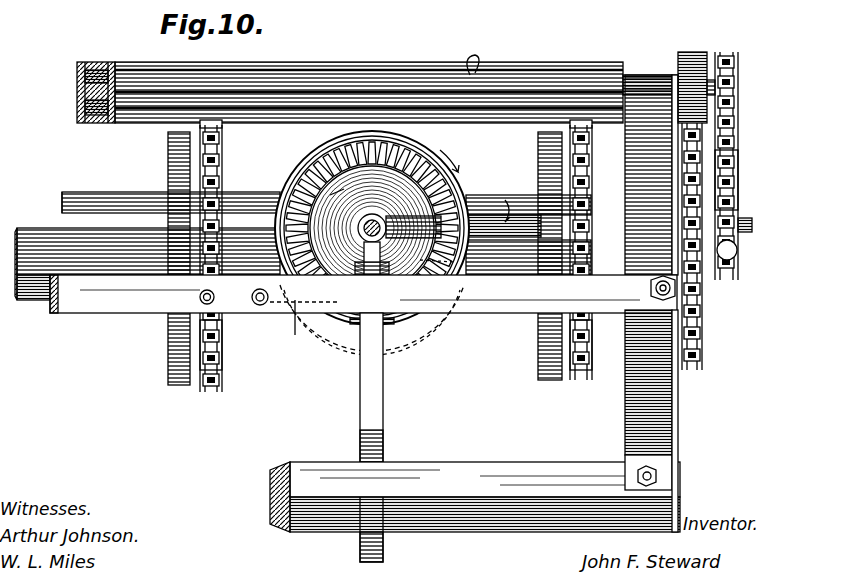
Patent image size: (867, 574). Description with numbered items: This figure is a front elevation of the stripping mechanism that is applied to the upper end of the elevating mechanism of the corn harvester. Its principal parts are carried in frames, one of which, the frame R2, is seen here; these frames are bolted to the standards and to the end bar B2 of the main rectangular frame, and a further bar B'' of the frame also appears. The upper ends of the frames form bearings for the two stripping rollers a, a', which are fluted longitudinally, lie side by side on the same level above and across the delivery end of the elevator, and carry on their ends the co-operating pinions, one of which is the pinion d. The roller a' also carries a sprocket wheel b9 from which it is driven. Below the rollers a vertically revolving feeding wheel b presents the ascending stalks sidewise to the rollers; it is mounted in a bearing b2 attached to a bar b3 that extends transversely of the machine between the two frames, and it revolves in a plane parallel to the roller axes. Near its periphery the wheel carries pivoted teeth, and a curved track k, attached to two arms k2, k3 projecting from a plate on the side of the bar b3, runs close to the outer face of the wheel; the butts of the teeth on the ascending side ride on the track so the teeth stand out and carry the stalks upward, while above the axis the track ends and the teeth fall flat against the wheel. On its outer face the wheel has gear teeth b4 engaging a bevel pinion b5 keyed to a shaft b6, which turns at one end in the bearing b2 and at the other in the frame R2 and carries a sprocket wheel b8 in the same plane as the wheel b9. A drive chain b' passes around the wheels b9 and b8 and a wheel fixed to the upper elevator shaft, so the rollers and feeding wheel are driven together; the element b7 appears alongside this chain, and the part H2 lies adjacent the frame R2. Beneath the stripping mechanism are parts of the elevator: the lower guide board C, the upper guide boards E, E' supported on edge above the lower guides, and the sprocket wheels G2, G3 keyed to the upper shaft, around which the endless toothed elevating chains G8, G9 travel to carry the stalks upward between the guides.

The stripping roller a is at (369, 99).
The stripping roller a' is at (96, 103).
The frame bar B'' is at (303, 257).
The end bar B2 is at (475, 497).
The guide board E' is at (167, 258).
The guide board E is at (537, 254).
The sprocket wheel G3 is at (222, 140).
The elevating chain G9 is at (222, 342).
The sprocket wheel G2 is at (592, 140).
The elevating chain G8 is at (592, 340).
The curved track k is at (295, 172).
The arm k2 is at (280, 262).
The arm k3 is at (305, 325).
The feeding wheel b is at (337, 190).
The drive chain b' is at (356, 227).
The bearing b2 is at (362, 240).
The bar b3 is at (362, 275).
The gear teeth b4 is at (440, 292).
The bevel pinion b5 is at (468, 196).
The shaft b6 is at (520, 198).
The chain b7 is at (738, 165).
The sprocket wheel b8 is at (738, 262).
The sprocket wheel b9 is at (738, 65).
The pinion d is at (696, 77).
The bracket H2 is at (651, 175).
The guide board C is at (383, 398).
The frame R2 is at (625, 390).